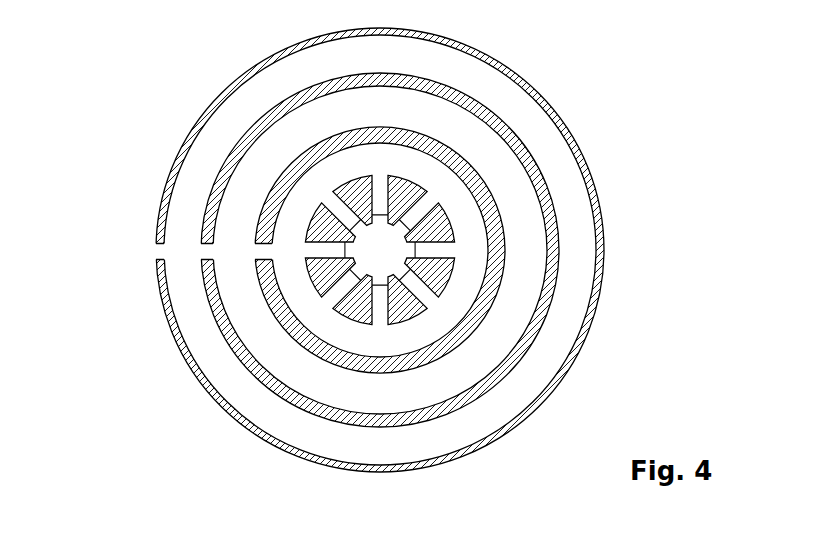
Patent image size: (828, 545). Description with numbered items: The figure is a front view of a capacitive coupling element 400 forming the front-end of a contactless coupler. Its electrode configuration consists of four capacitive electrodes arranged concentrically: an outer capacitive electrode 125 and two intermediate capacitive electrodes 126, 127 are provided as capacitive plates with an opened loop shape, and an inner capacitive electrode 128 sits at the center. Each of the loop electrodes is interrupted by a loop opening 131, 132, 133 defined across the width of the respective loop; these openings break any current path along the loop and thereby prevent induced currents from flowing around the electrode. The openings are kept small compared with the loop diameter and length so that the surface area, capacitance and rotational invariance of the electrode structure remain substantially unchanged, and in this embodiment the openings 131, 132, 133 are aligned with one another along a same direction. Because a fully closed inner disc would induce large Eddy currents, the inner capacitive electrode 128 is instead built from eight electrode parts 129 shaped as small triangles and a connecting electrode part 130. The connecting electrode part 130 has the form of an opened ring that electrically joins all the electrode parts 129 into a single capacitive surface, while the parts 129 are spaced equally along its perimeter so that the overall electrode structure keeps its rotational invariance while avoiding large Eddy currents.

The capacitive coupling element 400 is at (357, 253).
The outer capacitive electrode 125 is at (585, 153).
The intermediate capacitive electrode 126 is at (562, 237).
The intermediate capacitive electrode 127 is at (505, 268).
The inner capacitive electrode 128 is at (414, 336).
The electrode parts 129 is at (333, 317).
The connecting electrode part 130 is at (378, 305).
The loop opening 131 is at (151, 252).
The loop opening 132 is at (203, 252).
The loop opening 133 is at (258, 250).